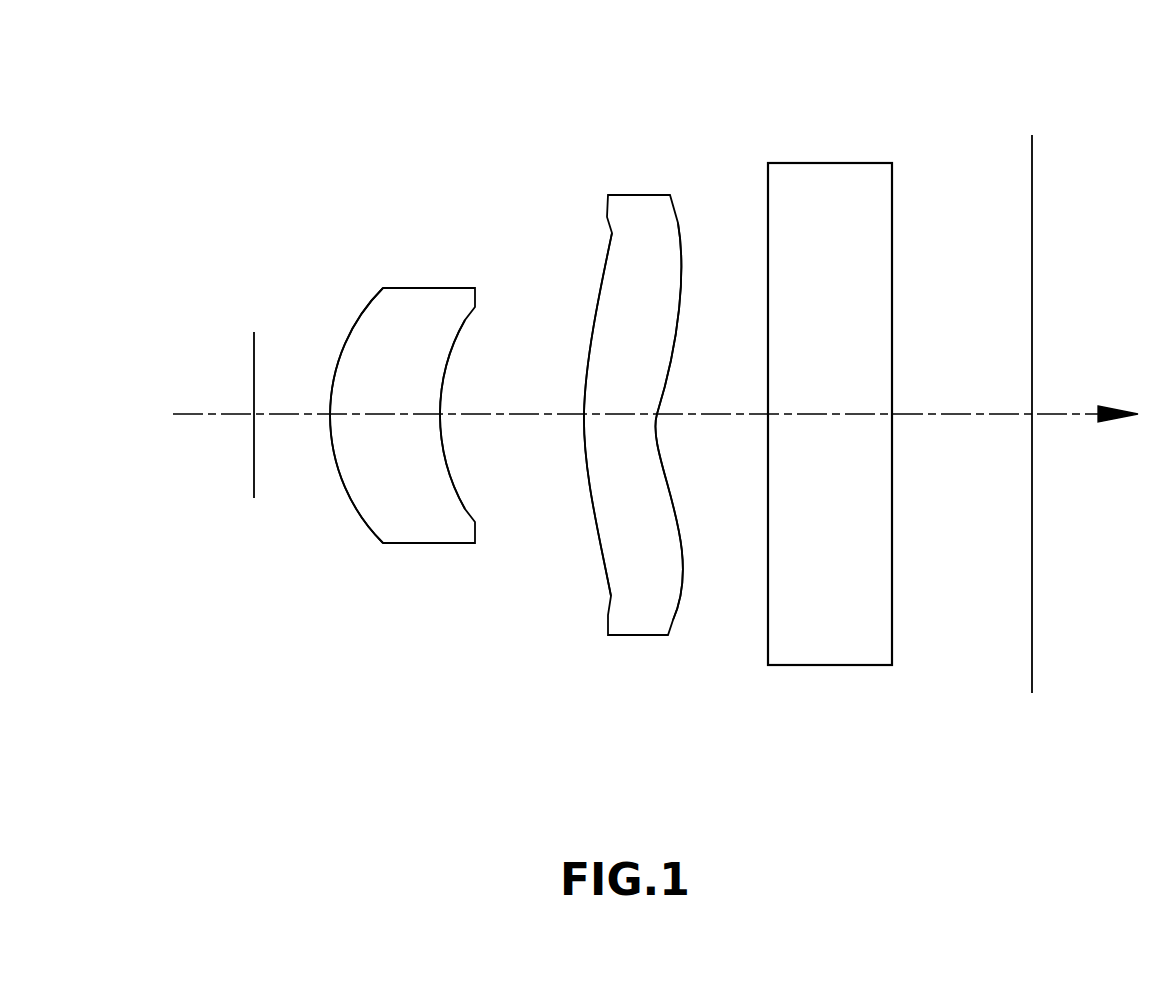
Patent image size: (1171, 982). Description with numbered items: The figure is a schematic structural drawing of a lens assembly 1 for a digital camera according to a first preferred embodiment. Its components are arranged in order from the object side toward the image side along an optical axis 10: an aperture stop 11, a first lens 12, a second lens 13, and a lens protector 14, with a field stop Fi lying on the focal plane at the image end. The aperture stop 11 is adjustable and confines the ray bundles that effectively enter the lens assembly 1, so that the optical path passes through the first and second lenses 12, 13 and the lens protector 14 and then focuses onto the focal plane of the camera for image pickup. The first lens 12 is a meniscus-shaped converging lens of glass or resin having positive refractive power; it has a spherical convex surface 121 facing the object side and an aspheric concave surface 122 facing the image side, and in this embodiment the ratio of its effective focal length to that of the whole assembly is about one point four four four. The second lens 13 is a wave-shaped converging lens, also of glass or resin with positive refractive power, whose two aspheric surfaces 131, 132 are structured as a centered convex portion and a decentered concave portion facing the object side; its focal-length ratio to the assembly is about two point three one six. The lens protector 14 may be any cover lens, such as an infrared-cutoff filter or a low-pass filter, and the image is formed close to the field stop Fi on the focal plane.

The lens assembly 1 is at (1112, 122).
The optical axis 10 is at (210, 414).
The aperture stop 11 is at (255, 339).
The first lens 12 is at (429, 438).
The spherical convex surface 121 is at (360, 518).
The aspheric concave surface 122 is at (465, 318).
The second lens 13 is at (646, 438).
The aspheric surface 131 is at (602, 552).
The aspheric surface 132 is at (677, 225).
The lens protector 14 is at (828, 665).
The field stop Fi is at (1032, 627).